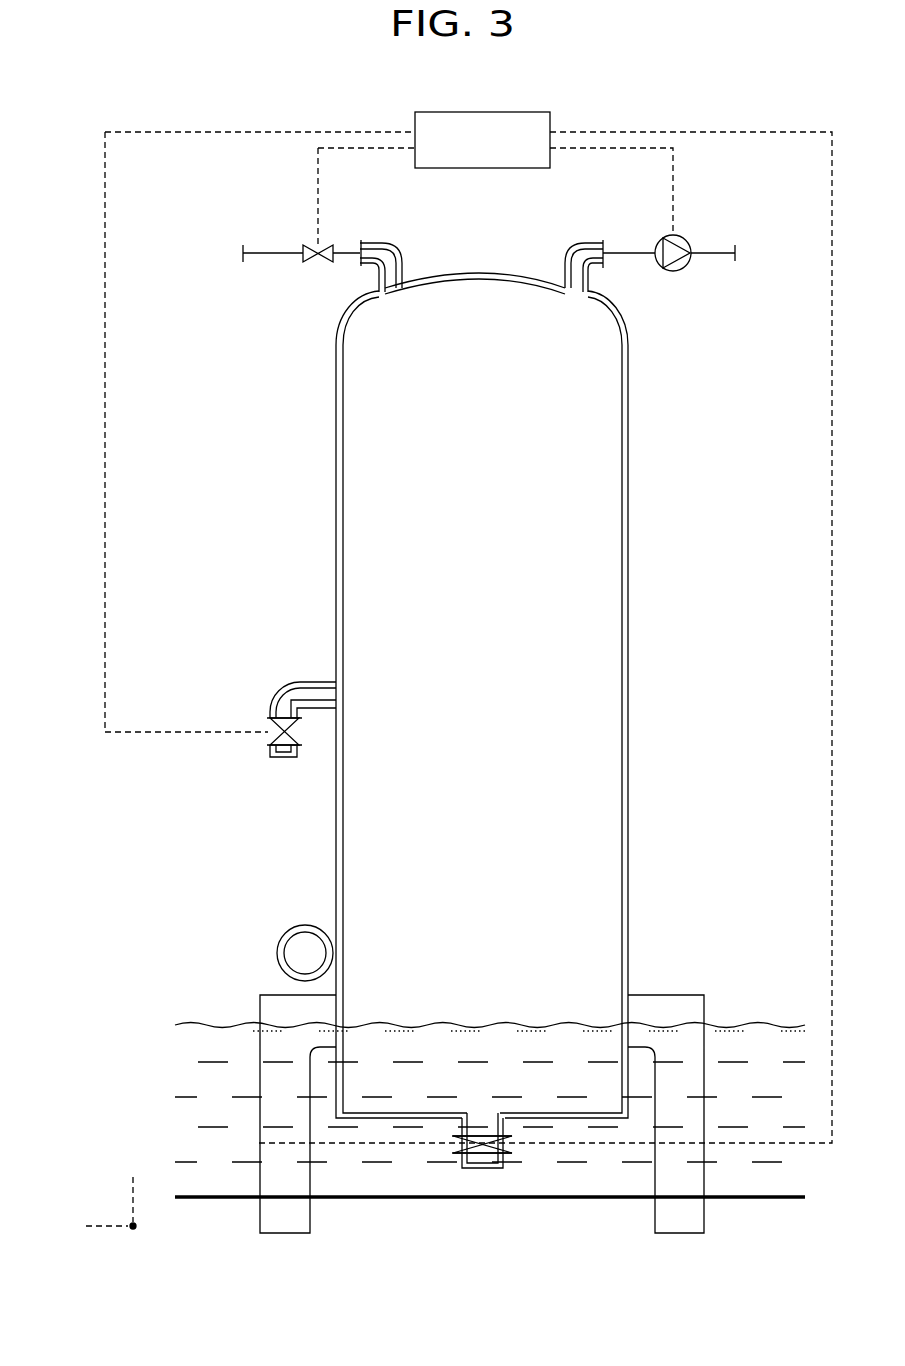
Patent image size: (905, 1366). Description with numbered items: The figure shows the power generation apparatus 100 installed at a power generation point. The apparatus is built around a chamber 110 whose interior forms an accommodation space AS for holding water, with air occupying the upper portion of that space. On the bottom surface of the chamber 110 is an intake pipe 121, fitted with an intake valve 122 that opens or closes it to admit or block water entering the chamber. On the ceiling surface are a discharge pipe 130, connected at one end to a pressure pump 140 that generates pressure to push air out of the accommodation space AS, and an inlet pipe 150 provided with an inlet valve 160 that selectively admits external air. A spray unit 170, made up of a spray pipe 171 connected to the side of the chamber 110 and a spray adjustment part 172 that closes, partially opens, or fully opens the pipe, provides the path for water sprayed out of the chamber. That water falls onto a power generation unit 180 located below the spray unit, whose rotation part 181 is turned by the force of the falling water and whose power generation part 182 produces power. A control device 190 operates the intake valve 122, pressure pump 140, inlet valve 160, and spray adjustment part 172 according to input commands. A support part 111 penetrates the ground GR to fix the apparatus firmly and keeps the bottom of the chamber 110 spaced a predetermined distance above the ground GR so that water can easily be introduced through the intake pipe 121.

The power generation apparatus 100 is at (498, 94).
The chamber 110 is at (630, 401).
The support part 111 is at (675, 995).
The intake pipe 121 is at (457, 1162).
The intake valve 122 is at (457, 1137).
The discharge pipe 130 is at (586, 243).
The pressure pump 140 is at (686, 239).
The inlet pipe 150 is at (365, 244).
The inlet valve 160 is at (306, 247).
The spray unit 170 is at (227, 687).
The spray pipe 171 is at (300, 682).
The spray adjustment part 172 is at (268, 720).
The power generation unit 180 is at (235, 941).
The rotation part 181 is at (290, 925).
The power generation part 182 is at (285, 960).
The control device 190 is at (552, 124).
The accommodation space AS is at (517, 793).
The ground GR is at (740, 1197).